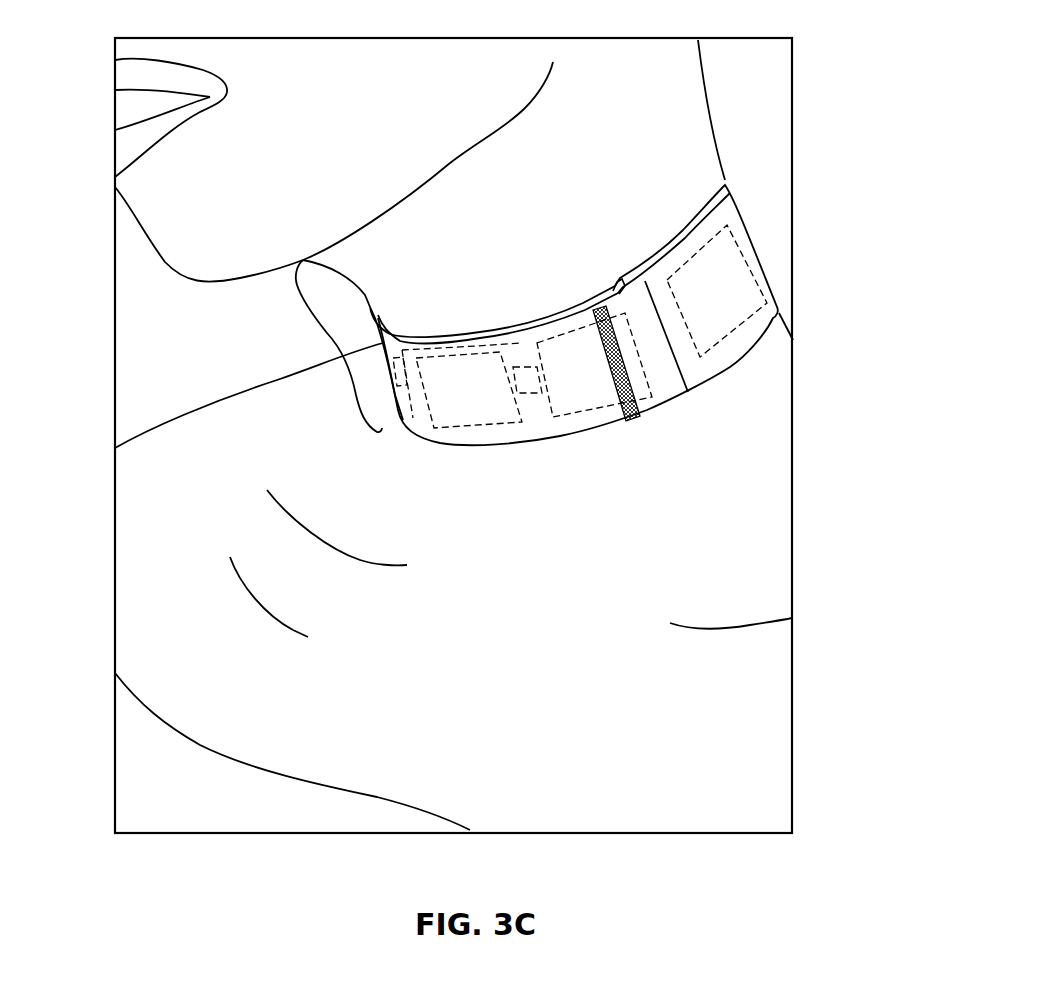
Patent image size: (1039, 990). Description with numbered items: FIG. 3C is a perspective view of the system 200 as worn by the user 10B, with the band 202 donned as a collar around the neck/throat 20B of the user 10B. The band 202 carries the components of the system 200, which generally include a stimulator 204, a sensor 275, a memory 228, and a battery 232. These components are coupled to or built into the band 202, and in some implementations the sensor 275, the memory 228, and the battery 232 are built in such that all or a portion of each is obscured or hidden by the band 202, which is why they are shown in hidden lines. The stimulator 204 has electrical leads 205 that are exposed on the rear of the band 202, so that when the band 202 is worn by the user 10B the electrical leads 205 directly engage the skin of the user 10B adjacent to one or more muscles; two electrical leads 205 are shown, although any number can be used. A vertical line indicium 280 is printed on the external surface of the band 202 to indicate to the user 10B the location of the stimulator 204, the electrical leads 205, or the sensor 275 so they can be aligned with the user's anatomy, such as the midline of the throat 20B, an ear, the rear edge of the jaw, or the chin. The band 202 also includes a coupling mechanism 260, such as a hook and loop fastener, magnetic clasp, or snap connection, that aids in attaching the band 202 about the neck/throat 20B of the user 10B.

The user 10B is at (162, 283).
The neck/throat 20B is at (327, 333).
The system 200 is at (783, 180).
The band 202 is at (685, 230).
The stimulator 204 is at (427, 440).
The electrical leads 205 is at (393, 323).
The memory 228 is at (522, 395).
The battery 232 is at (740, 348).
The coupling mechanism 260 is at (612, 255).
The sensor 275 is at (657, 400).
The vertical line indicium 280 is at (618, 385).